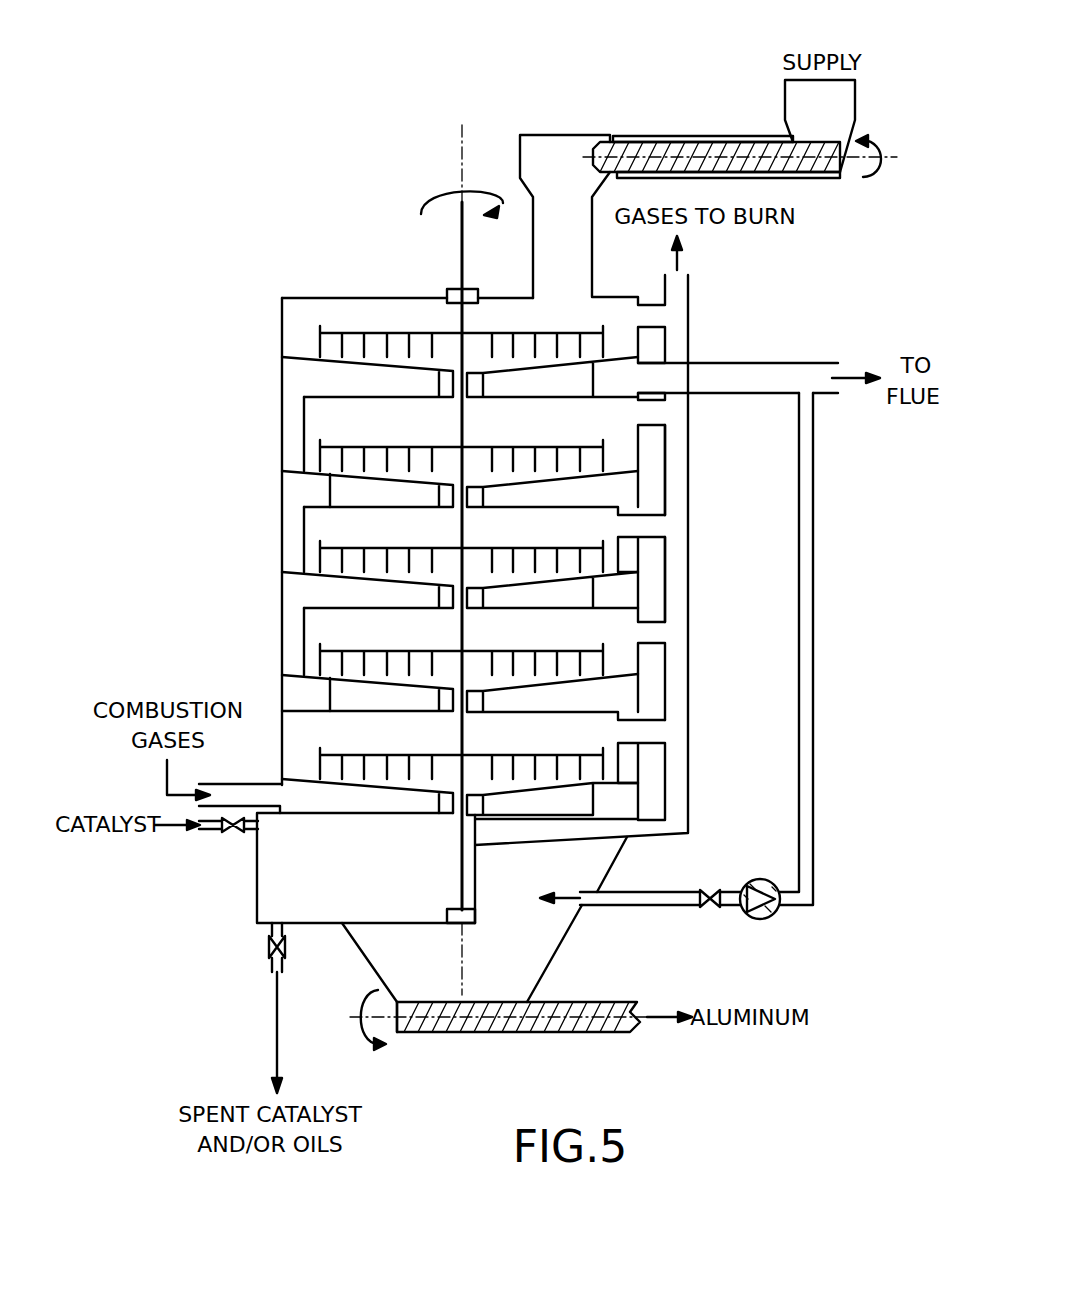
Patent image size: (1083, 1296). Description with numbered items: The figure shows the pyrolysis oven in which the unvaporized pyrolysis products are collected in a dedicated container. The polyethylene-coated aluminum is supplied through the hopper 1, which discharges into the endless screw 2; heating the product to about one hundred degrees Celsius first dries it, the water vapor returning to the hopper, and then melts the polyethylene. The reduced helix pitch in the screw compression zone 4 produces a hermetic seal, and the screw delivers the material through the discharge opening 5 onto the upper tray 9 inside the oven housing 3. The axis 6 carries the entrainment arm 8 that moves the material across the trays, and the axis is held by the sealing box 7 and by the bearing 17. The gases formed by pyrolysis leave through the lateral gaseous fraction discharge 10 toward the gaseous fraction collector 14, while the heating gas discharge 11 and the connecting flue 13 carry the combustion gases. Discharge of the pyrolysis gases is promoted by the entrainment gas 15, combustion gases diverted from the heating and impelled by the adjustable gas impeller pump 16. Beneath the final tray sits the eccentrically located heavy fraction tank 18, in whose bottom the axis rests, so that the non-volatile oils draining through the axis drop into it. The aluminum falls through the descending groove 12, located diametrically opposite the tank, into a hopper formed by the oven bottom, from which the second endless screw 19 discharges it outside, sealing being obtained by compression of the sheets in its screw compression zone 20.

The hopper 1 is at (848, 102).
The endless screw 2 is at (688, 150).
The oven housing 3 is at (282, 412).
The screw compression zone 4 is at (617, 136).
The discharge opening 5 is at (575, 172).
The axis 6 is at (458, 242).
The sealing box 7 is at (450, 289).
The entrainment arm 8 is at (350, 318).
The tray 9 is at (310, 372).
The gaseous fraction discharge 10 is at (655, 412).
The heating gas discharge 11 is at (748, 378).
The descending groove 12 is at (345, 497).
The connecting flue 13 is at (285, 624).
The gaseous fraction collector 14 is at (665, 525).
The entrainment gas 15 is at (815, 640).
The gas impeller pump 16 is at (765, 908).
The bearing 17 is at (466, 924).
The heavy fraction tank 18 is at (339, 880).
The second endless screw 19 is at (590, 1008).
The screw compression zone 20 is at (630, 1006).